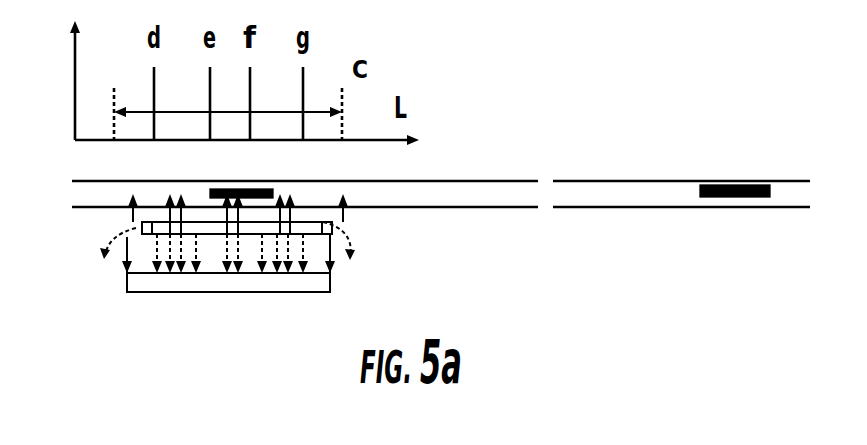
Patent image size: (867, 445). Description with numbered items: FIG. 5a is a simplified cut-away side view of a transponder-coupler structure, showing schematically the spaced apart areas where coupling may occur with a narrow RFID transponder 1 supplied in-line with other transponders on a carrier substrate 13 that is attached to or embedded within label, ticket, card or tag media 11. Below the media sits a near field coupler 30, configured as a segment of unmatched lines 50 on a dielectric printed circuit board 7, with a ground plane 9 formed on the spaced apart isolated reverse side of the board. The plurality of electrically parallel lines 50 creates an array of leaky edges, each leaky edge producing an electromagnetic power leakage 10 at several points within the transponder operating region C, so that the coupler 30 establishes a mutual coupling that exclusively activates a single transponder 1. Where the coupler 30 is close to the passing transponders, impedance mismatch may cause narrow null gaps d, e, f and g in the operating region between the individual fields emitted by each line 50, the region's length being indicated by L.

The RFID transponder 1 is at (232, 190).
The printed circuit board 7 is at (333, 267).
The ground plane 9 is at (235, 293).
The electromagnetic power leakage 10 is at (140, 226).
The label, ticket, card or tag media 11 is at (468, 180).
The carrier substrate 13 is at (477, 207).
The near field coupler 30 is at (212, 269).
The lines 50 is at (185, 240).